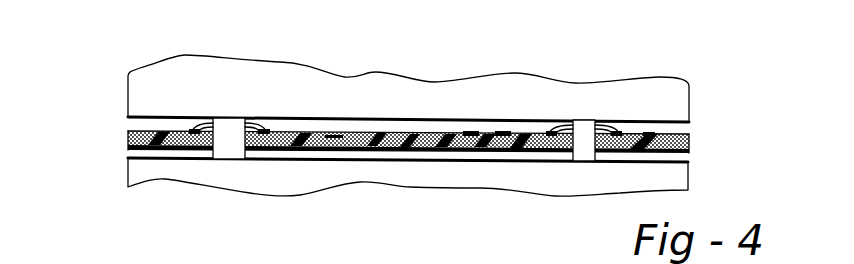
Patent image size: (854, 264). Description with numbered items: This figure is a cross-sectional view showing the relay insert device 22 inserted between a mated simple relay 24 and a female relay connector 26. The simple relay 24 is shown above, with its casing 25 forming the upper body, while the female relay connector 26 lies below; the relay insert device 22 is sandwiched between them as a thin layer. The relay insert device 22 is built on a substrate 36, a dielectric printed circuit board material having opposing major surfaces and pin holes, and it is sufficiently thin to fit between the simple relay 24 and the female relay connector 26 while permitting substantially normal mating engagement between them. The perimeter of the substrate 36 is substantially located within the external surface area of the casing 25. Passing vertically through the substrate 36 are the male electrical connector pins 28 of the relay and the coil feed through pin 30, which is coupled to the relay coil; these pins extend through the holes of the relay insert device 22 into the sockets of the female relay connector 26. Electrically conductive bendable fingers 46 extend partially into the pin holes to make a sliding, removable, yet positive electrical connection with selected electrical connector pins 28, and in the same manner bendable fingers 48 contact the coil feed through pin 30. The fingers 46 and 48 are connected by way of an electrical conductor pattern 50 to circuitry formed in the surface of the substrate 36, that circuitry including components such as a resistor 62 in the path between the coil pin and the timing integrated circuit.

The relay insert device 22 is at (397, 157).
The simple relay 24 is at (399, 66).
The casing 25 is at (170, 82).
The female relay connector 26 is at (186, 193).
The male electrical connector pins 28 is at (582, 162).
The coil feed through pin 30 is at (229, 153).
The substrate 36 is at (128, 132).
The electrically conductive bendable fingers 46 is at (618, 133).
The electrically conductive bendable fingers 48 is at (266, 130).
The electrical conductor pattern 50 is at (505, 131).
The resistor 62 is at (313, 152).